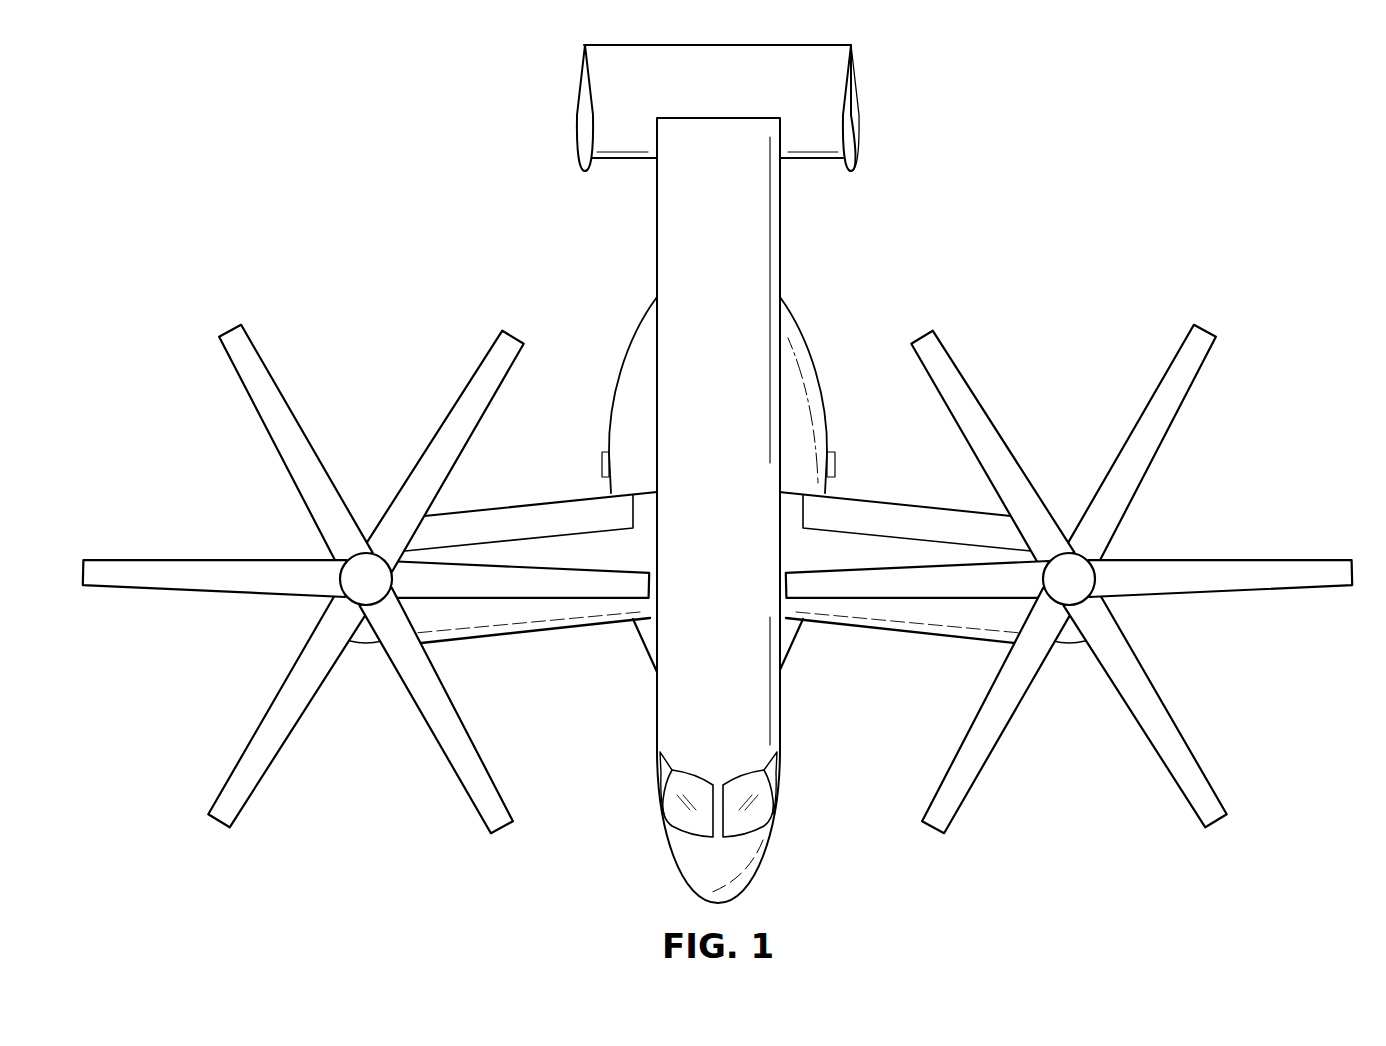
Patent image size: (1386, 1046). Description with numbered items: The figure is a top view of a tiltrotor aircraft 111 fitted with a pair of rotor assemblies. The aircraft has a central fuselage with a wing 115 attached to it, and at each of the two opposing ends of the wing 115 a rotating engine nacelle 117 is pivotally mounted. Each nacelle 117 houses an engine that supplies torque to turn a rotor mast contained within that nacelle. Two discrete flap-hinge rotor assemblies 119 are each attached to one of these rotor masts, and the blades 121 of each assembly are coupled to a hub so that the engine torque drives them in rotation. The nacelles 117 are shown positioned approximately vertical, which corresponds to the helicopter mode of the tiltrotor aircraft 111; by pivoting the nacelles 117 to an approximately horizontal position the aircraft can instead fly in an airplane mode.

The tiltrotor aircraft 111 is at (717, 474).
The wing 115 is at (517, 636).
The rotating engine nacelle 117 is at (1070, 645).
The flap-hinge rotor assembly 119 is at (717, 538).
The blade 121 is at (152, 588).